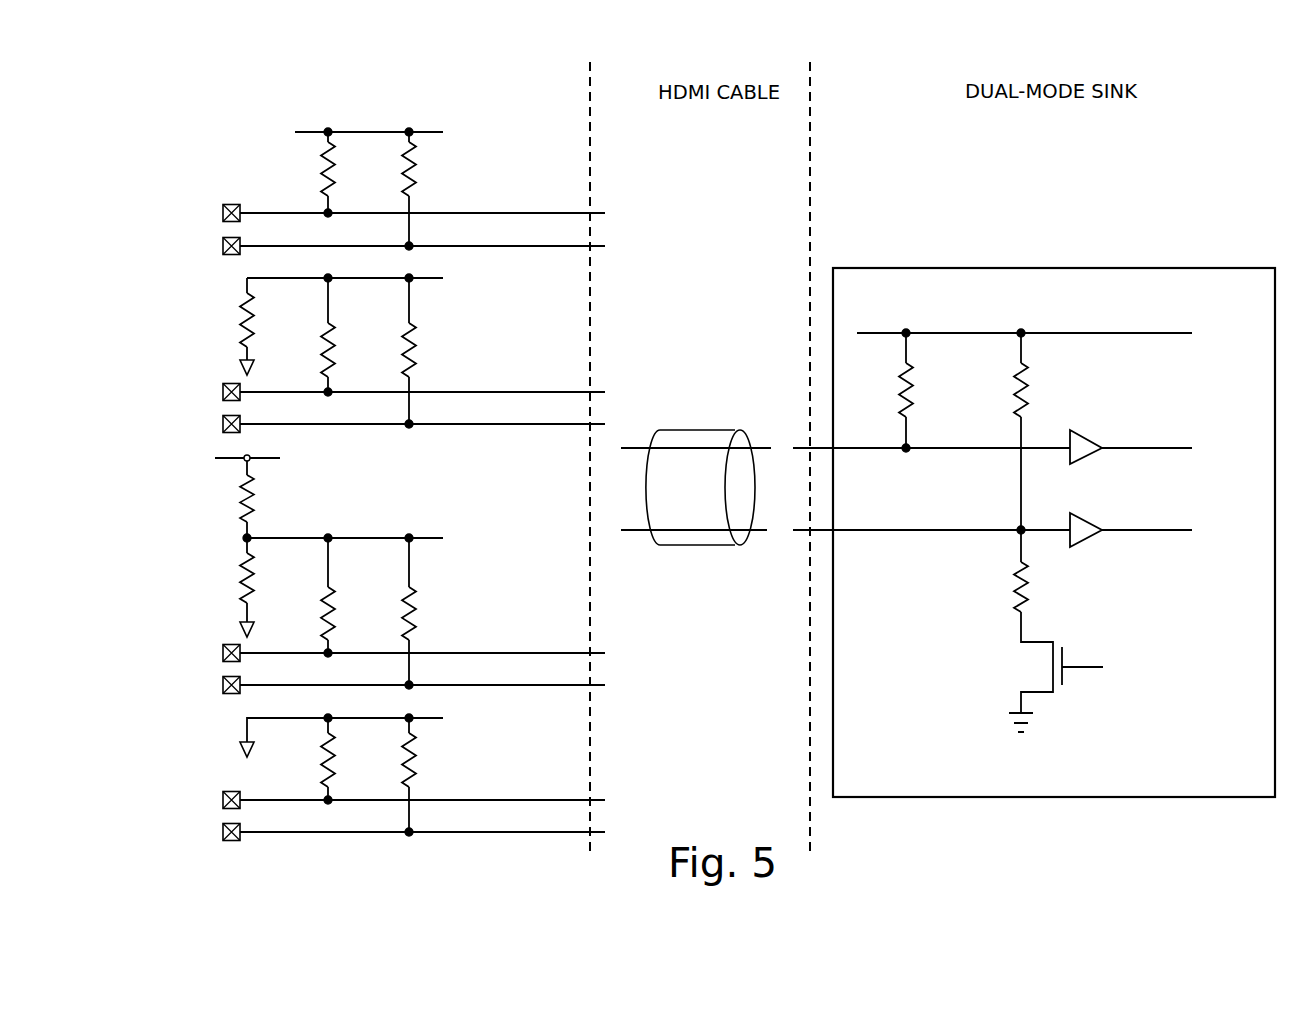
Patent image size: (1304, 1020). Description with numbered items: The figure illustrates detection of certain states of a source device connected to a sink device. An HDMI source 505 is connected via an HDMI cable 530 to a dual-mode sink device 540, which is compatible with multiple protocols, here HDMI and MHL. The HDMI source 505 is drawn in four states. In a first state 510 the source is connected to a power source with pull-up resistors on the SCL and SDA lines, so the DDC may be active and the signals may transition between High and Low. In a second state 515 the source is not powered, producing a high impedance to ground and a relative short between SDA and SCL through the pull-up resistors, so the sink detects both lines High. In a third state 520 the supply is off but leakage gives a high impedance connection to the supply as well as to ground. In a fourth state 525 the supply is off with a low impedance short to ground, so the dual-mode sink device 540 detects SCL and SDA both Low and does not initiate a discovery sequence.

The HDMI source 505 is at (249, 107).
The first state 510 is at (181, 173).
The second state 515 is at (181, 351).
The third state 520 is at (181, 540).
The fourth state 525 is at (181, 758).
The HDMI cable 530 is at (677, 403).
The dual-mode sink device 540 is at (1232, 268).